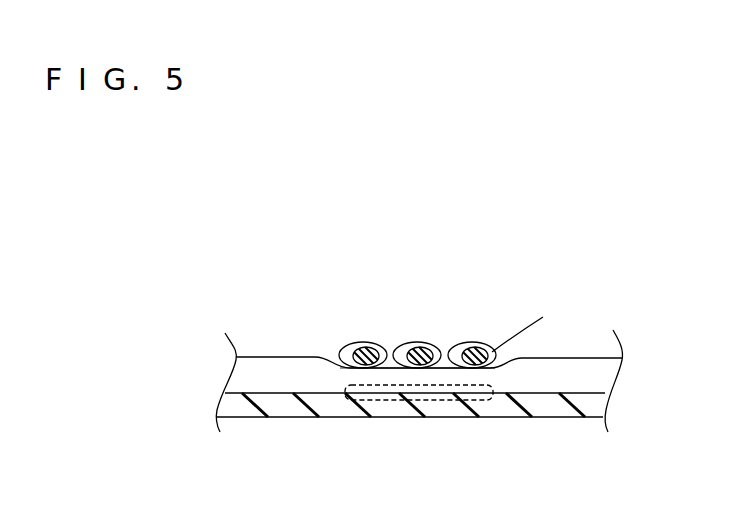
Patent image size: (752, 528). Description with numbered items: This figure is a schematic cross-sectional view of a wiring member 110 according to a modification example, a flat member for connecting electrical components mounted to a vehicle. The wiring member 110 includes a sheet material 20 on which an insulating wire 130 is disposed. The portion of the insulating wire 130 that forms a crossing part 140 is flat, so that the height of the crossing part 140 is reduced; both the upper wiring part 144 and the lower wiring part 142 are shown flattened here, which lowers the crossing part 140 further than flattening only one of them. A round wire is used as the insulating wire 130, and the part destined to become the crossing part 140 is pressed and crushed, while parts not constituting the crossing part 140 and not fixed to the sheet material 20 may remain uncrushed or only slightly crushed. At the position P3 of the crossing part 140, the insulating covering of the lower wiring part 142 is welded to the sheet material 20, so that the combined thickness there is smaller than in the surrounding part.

The wiring member 110 is at (263, 212).
The sheet material 20 is at (543, 418).
The position of the crossing part P3 is at (410, 400).
The insulating wire 130 is at (547, 370).
The crossing part 140 is at (428, 305).
The lower wiring part 142 is at (446, 374).
The upper wiring part 144 is at (518, 285).